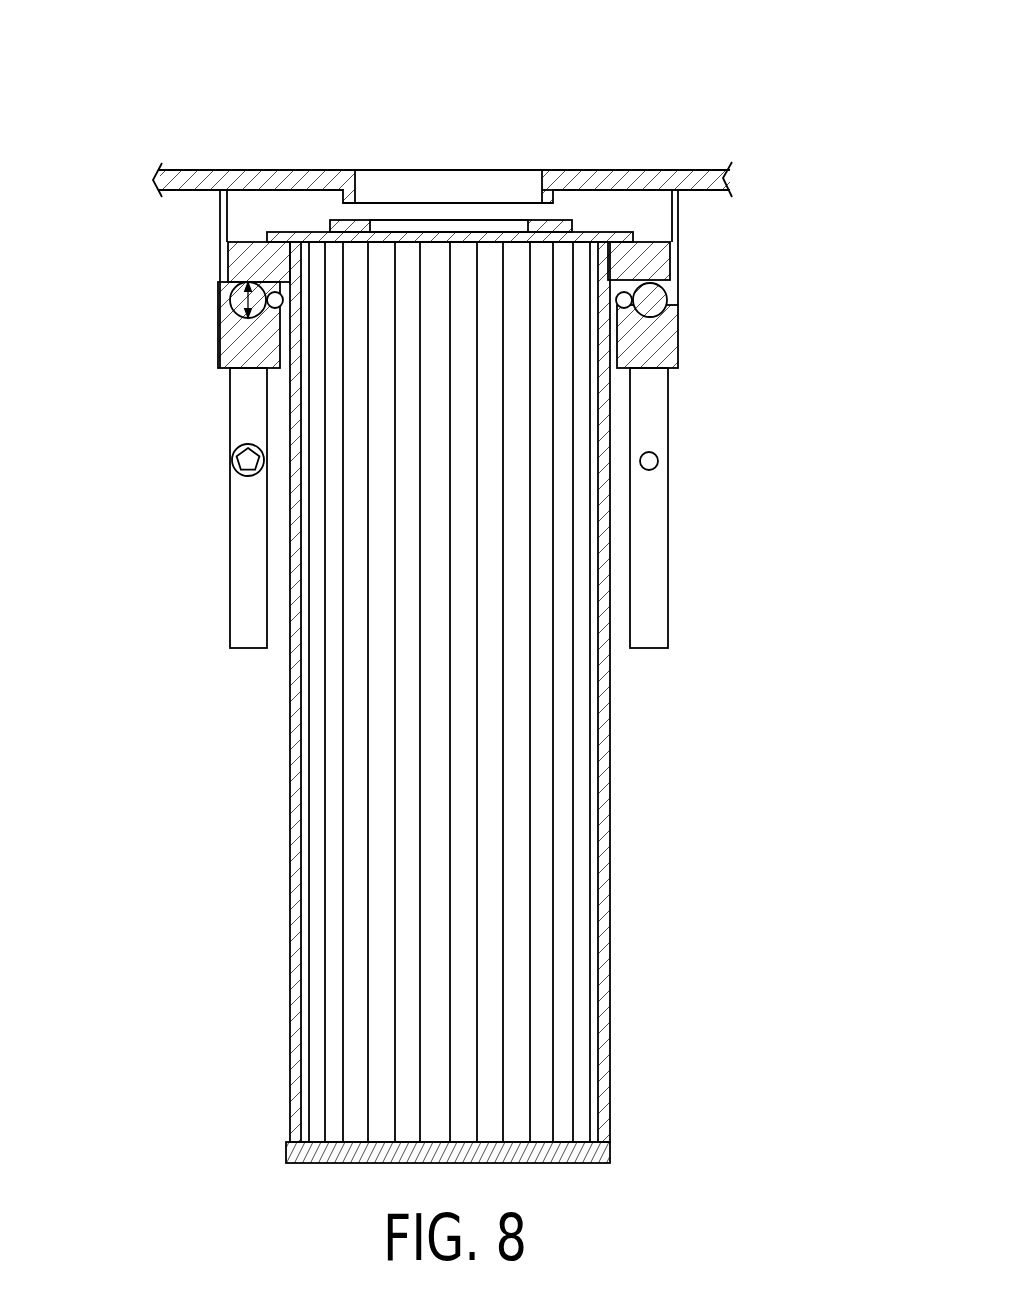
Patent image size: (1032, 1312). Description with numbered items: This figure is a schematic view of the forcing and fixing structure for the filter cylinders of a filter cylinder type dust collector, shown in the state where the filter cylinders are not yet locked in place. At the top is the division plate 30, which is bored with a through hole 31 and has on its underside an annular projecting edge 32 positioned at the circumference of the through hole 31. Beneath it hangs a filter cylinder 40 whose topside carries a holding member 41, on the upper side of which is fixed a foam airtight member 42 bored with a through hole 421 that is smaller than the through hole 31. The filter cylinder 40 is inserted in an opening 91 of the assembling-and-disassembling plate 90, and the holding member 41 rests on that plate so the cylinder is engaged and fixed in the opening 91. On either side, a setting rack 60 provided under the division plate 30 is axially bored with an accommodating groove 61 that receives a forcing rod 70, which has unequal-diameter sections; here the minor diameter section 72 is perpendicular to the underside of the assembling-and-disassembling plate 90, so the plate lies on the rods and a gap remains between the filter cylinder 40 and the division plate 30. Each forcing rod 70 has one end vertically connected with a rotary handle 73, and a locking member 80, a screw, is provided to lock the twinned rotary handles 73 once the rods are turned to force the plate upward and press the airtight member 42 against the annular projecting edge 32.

The division plate 30 is at (670, 168).
The through hole 31 is at (520, 178).
The annular projecting edge 32 is at (550, 193).
The filter cylinder 40 is at (612, 710).
The holding member 41 is at (292, 230).
The airtight member 42 is at (337, 221).
The through hole of airtight member 421 is at (382, 226).
The setting rack 60 is at (683, 355).
The accommodating groove 61 is at (668, 310).
The forcing rod 70 is at (672, 288).
The minor diameter section 72 is at (232, 303).
The rotary handle 73 is at (653, 545).
The locking member 80 is at (227, 457).
The assembling-and-disassembling plate 90 is at (227, 270).
The opening 91 is at (253, 238).